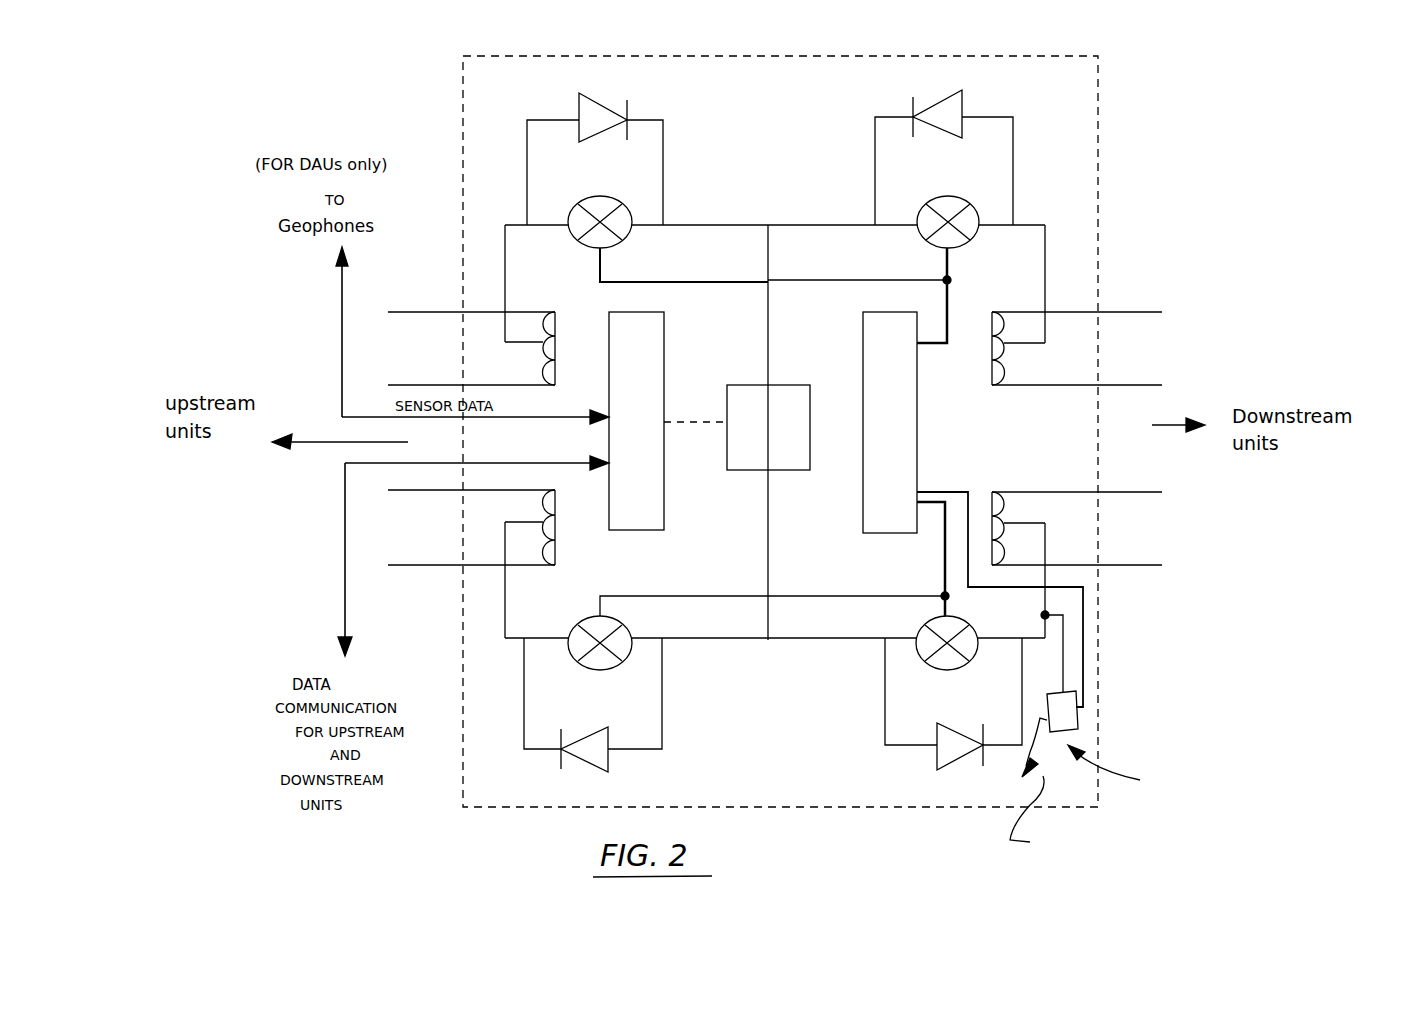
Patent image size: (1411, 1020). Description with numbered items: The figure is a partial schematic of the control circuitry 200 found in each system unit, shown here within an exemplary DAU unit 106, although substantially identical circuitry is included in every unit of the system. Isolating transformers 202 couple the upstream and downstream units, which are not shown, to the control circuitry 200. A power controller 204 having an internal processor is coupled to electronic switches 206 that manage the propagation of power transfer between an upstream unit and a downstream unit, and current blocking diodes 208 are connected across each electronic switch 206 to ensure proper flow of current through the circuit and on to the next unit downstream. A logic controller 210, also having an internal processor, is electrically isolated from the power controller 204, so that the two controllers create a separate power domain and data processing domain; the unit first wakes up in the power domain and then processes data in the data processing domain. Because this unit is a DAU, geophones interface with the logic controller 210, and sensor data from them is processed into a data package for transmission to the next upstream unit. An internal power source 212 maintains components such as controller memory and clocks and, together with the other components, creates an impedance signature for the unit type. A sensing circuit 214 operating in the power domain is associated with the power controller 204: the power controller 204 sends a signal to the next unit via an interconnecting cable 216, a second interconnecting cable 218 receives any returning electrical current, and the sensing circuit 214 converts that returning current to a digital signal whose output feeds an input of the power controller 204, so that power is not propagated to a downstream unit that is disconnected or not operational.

The unit 106 is at (1098, 222).
The control circuitry 200 is at (1063, 180).
The isolating transformers 202 is at (555, 312).
The power controller 204 is at (863, 343).
The electronic switches 206 is at (593, 195).
The current blocking diodes 208 is at (610, 105).
The logic controller 210 is at (664, 340).
The internal power source 212 is at (727, 460).
The sensing circuit 214 is at (1078, 722).
The interconnecting cable 216 is at (1175, 372).
The second interconnecting cable 218 is at (1175, 490).